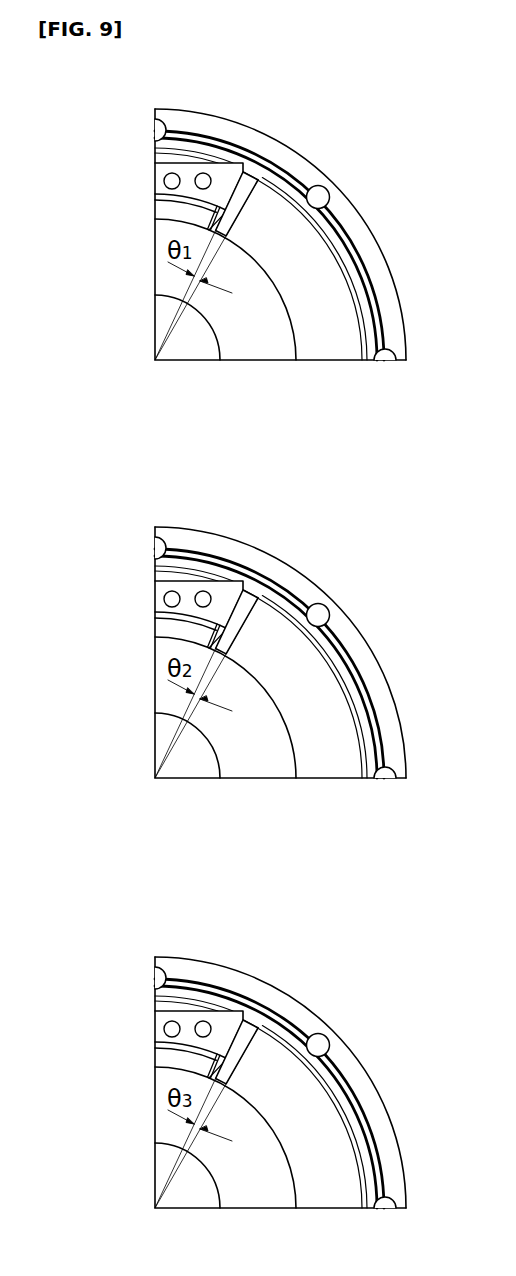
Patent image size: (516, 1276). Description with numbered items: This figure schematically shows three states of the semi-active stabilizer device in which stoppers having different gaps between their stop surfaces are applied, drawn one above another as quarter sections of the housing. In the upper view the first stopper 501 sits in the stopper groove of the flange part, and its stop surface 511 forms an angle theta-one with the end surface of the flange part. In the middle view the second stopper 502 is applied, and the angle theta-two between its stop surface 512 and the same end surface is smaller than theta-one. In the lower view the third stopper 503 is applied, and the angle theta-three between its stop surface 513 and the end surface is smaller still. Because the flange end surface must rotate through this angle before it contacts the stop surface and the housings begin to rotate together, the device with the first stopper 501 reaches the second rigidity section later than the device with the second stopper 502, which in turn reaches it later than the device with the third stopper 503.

The first stopper 501 is at (160, 168).
The second stopper 502 is at (164, 610).
The third stopper 503 is at (164, 1042).
The stop surface 511 is at (292, 210).
The stop surface 512 is at (225, 634).
The stop surface 513 is at (237, 1065).